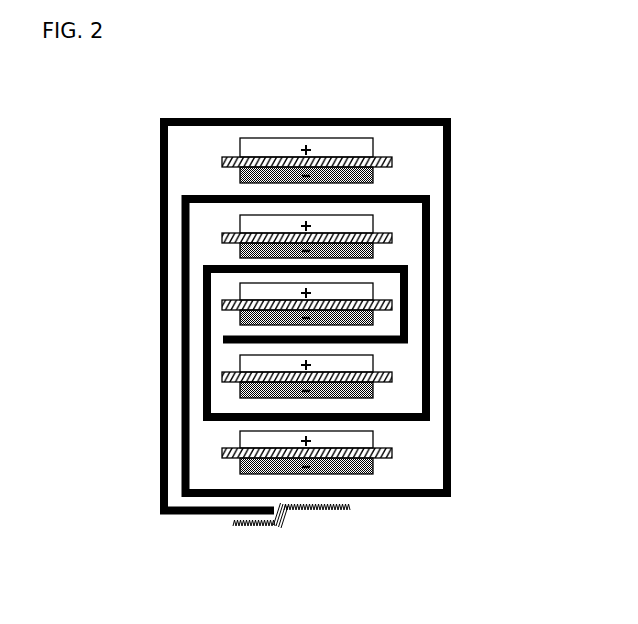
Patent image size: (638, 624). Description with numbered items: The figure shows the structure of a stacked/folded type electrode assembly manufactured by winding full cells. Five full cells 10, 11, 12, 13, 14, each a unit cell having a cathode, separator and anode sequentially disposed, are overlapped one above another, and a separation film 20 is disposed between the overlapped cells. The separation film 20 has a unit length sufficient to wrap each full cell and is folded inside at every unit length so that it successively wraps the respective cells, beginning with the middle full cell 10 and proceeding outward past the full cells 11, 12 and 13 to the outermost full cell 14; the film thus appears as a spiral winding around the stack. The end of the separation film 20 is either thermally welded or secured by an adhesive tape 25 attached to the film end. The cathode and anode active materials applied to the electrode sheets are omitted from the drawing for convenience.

The separation film 20 is at (160, 241).
The outermost full cell 14 is at (373, 148).
The full cell 12 is at (373, 222).
The middle full cell 10 is at (373, 290).
The full cell 11 is at (373, 368).
The full cell 13 is at (373, 445).
The adhesive tape 25 is at (286, 512).